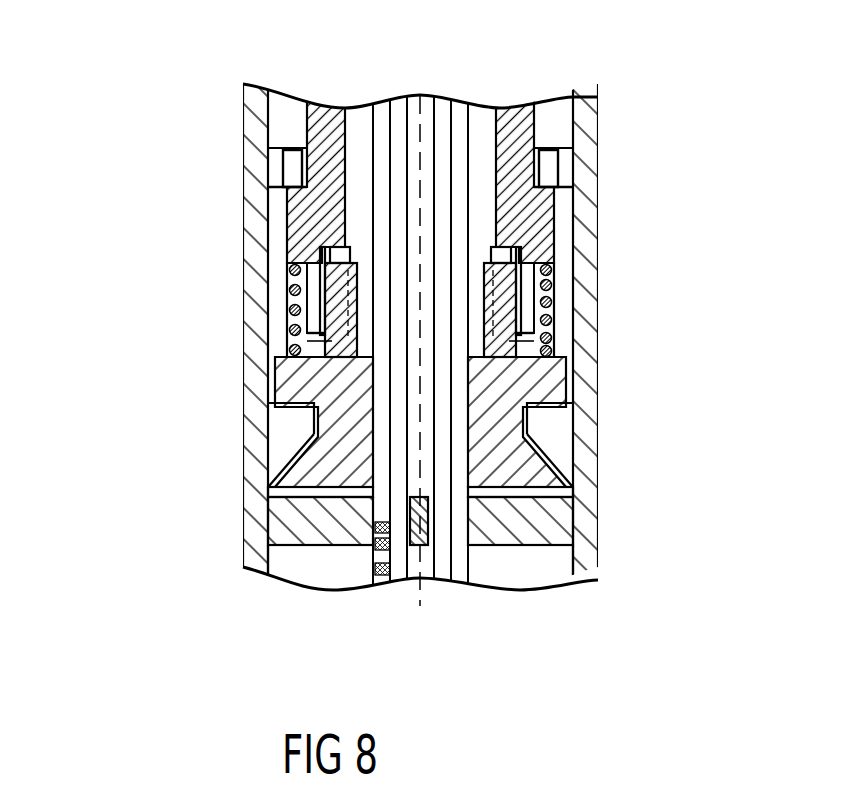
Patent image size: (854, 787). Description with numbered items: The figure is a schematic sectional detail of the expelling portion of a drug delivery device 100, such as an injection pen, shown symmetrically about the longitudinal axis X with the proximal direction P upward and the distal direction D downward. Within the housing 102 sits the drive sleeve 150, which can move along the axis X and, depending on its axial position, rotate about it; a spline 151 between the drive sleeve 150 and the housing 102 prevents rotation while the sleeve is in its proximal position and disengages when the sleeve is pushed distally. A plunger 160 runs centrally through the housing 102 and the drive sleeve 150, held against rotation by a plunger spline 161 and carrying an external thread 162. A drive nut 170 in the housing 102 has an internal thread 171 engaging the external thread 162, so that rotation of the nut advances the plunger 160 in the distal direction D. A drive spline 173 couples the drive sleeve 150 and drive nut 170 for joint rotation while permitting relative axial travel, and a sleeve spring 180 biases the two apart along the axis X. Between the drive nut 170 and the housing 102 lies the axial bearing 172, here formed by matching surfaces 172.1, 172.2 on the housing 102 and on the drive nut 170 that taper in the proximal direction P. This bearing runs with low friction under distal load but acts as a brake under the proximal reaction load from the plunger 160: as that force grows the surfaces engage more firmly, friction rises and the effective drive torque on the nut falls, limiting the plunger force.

The drug delivery device 100 is at (213, 115).
The housing 102 is at (588, 118).
The drive sleeve 150 is at (545, 240).
The spline 151 is at (548, 170).
The plunger 160 is at (441, 112).
The plunger spline 161 is at (428, 530).
The external thread 162 is at (381, 556).
The drive nut 170 is at (540, 378).
The internal thread 171 is at (530, 497).
The axial bearing 172 is at (540, 430).
The matching surface 172.1 is at (290, 452).
The matching surface 172.2 is at (278, 470).
The drive spline 173 is at (332, 305).
The sleeve spring 180 is at (548, 301).
The longitudinal axis X is at (417, 67).
The proximal direction P is at (419, 95).
The distal direction D is at (424, 635).